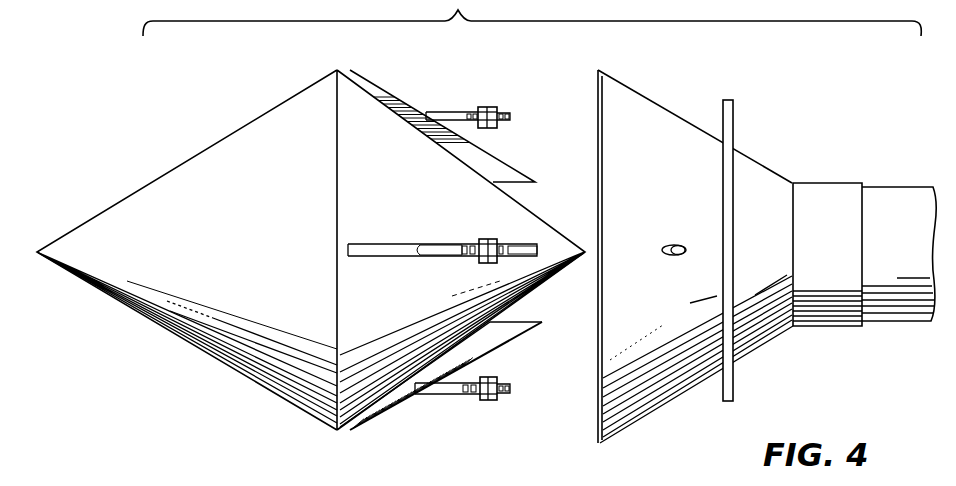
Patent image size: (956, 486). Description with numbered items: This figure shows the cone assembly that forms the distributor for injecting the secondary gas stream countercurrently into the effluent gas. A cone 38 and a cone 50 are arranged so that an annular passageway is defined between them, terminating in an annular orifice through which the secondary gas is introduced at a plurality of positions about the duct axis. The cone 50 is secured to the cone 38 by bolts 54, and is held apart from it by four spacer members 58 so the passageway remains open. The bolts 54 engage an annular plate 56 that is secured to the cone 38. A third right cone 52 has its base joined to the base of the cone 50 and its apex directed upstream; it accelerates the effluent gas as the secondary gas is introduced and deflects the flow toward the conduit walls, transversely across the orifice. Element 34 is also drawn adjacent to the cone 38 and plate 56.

The feed horn / waveguide section 34 is at (890, 187).
The cone 38 is at (650, 100).
The cone 50 is at (396, 200).
The third right cone 52 is at (282, 200).
The bolts 54 is at (466, 112).
The annular plate 56 is at (735, 132).
The spacer members 58 is at (510, 172).